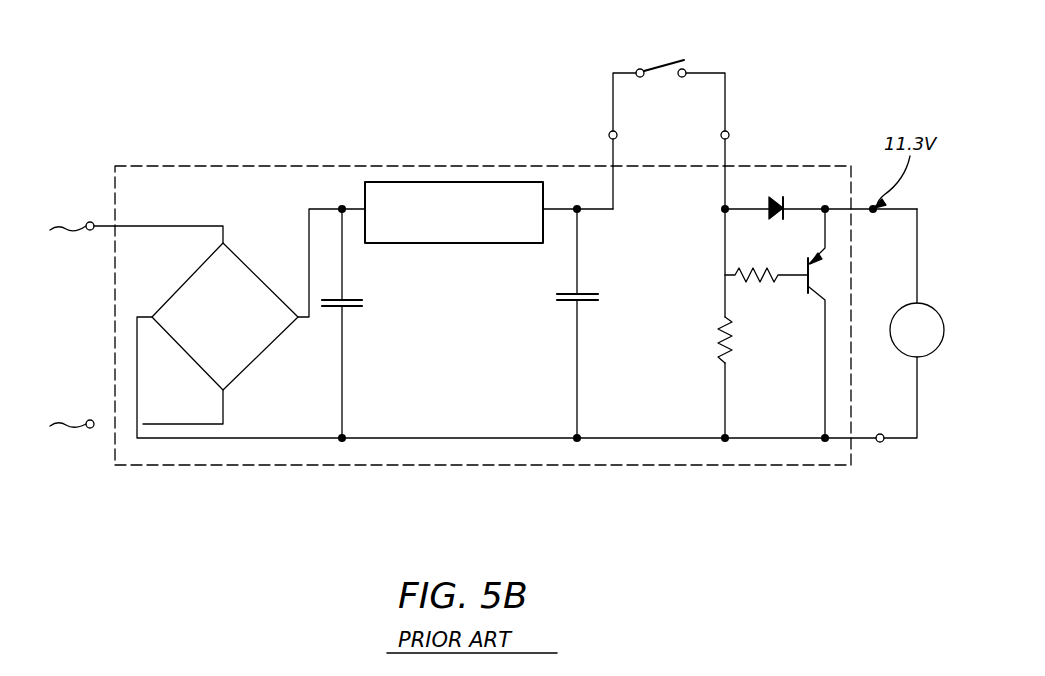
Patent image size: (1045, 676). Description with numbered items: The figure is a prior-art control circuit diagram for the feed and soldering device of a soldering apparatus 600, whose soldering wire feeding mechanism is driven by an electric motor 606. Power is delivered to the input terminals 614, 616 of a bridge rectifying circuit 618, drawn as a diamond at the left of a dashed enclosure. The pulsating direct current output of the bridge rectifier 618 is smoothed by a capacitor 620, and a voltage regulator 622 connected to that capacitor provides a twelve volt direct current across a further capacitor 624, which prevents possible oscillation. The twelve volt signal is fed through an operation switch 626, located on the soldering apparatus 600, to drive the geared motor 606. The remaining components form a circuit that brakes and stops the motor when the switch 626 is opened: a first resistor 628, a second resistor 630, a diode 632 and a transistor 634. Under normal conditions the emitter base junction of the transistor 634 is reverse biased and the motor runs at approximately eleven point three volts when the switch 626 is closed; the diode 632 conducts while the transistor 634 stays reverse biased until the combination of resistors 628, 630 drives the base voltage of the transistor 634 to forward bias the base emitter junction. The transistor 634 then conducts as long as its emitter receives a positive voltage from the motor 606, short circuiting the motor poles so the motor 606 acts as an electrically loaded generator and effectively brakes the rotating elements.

The soldering apparatus 600 is at (250, 137).
The input terminal 614 is at (88, 223).
The input terminal 616 is at (92, 428).
The bridge rectifying circuit 618 is at (244, 376).
The capacitor 620 is at (352, 310).
The voltage regulator 622 is at (428, 245).
The further capacitor 624 is at (568, 308).
The operation switch 626 is at (658, 68).
The first resistor 628 is at (722, 326).
The second resistor 630 is at (762, 270).
The diode 632 is at (772, 196).
The transistor 634 is at (806, 282).
The electric motor 606 is at (891, 343).